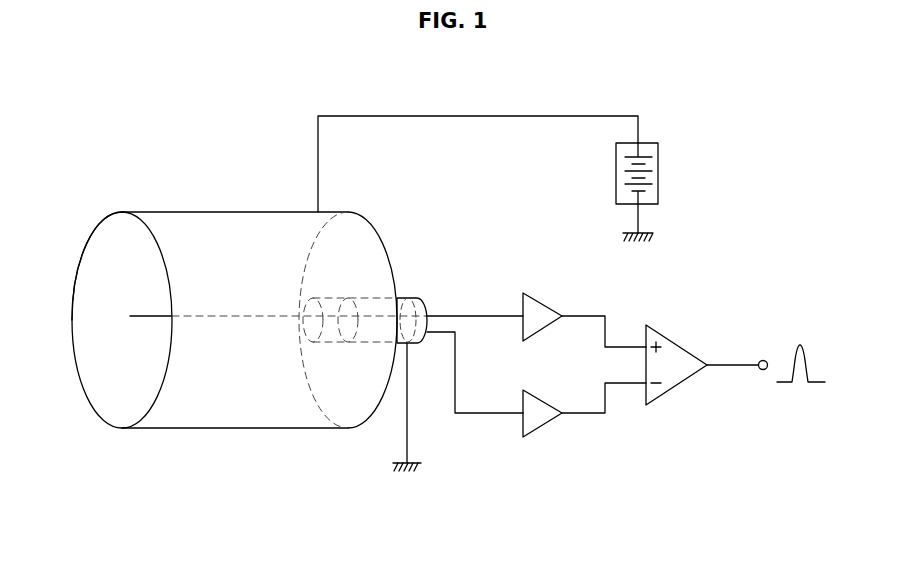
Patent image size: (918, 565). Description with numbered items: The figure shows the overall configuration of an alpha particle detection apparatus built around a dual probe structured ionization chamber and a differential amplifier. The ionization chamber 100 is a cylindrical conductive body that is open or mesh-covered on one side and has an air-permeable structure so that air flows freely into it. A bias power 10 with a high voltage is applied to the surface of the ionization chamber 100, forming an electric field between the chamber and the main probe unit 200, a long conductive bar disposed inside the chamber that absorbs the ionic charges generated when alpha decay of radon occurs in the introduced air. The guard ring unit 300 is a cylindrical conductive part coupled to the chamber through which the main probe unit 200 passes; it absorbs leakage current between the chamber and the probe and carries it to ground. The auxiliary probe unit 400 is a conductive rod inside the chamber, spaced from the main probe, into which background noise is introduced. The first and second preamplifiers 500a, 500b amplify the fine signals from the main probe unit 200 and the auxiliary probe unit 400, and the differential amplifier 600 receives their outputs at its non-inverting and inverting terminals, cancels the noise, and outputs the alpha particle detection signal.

The ionization chamber 100 is at (233, 428).
The main probe unit 200 is at (150, 316).
The guard ring unit 300 is at (403, 297).
The auxiliary probe unit 400 is at (332, 330).
The first preamplifier 500a is at (550, 297).
The second preamplifier 500b is at (540, 428).
The differential amplifier 600 is at (685, 340).
The bias power 10 is at (662, 170).